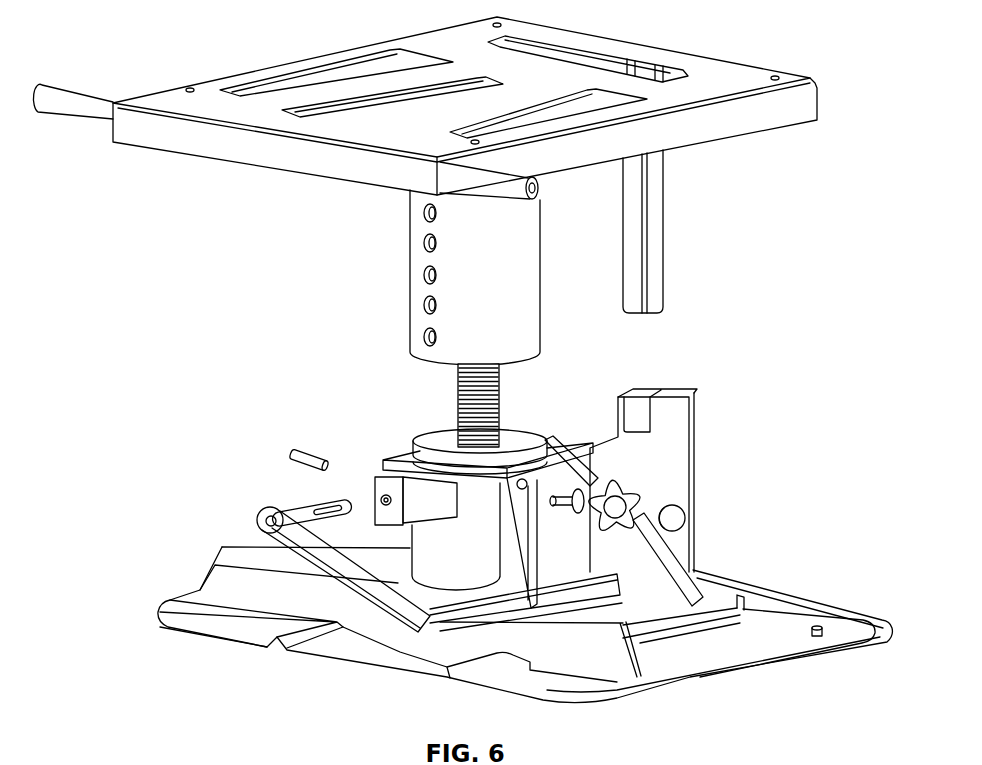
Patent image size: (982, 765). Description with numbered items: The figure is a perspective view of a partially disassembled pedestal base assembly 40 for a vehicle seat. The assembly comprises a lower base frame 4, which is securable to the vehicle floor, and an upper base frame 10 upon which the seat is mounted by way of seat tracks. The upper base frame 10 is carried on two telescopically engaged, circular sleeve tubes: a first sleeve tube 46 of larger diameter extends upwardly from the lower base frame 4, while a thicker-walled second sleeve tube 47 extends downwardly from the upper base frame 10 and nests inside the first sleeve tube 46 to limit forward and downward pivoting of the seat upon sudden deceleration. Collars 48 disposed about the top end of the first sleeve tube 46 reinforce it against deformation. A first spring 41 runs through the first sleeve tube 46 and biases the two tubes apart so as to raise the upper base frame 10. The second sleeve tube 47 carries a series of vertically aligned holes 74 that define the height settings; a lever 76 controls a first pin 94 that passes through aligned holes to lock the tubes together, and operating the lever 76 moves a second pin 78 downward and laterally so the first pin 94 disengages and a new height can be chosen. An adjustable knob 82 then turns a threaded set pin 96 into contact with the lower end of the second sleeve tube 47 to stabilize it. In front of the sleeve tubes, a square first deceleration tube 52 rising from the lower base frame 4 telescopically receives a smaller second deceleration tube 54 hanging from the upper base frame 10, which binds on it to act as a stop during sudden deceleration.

The lower base frame 4 is at (753, 658).
The upper base frame 10 is at (812, 80).
The pedestal base assembly 40 is at (203, 30).
The first spring 41 is at (459, 394).
The first sleeve tube 46 is at (473, 567).
The second sleeve tube 47 is at (405, 268).
The collars 48 is at (378, 455).
The first deceleration tube 52 is at (672, 433).
The second deceleration tube 54 is at (657, 241).
The holes 74 is at (424, 214).
The lever 76 is at (258, 514).
The second pin 78 is at (314, 448).
The adjustable knob 82 is at (640, 512).
The first pin 94 is at (330, 498).
The set pin 96 is at (571, 464).